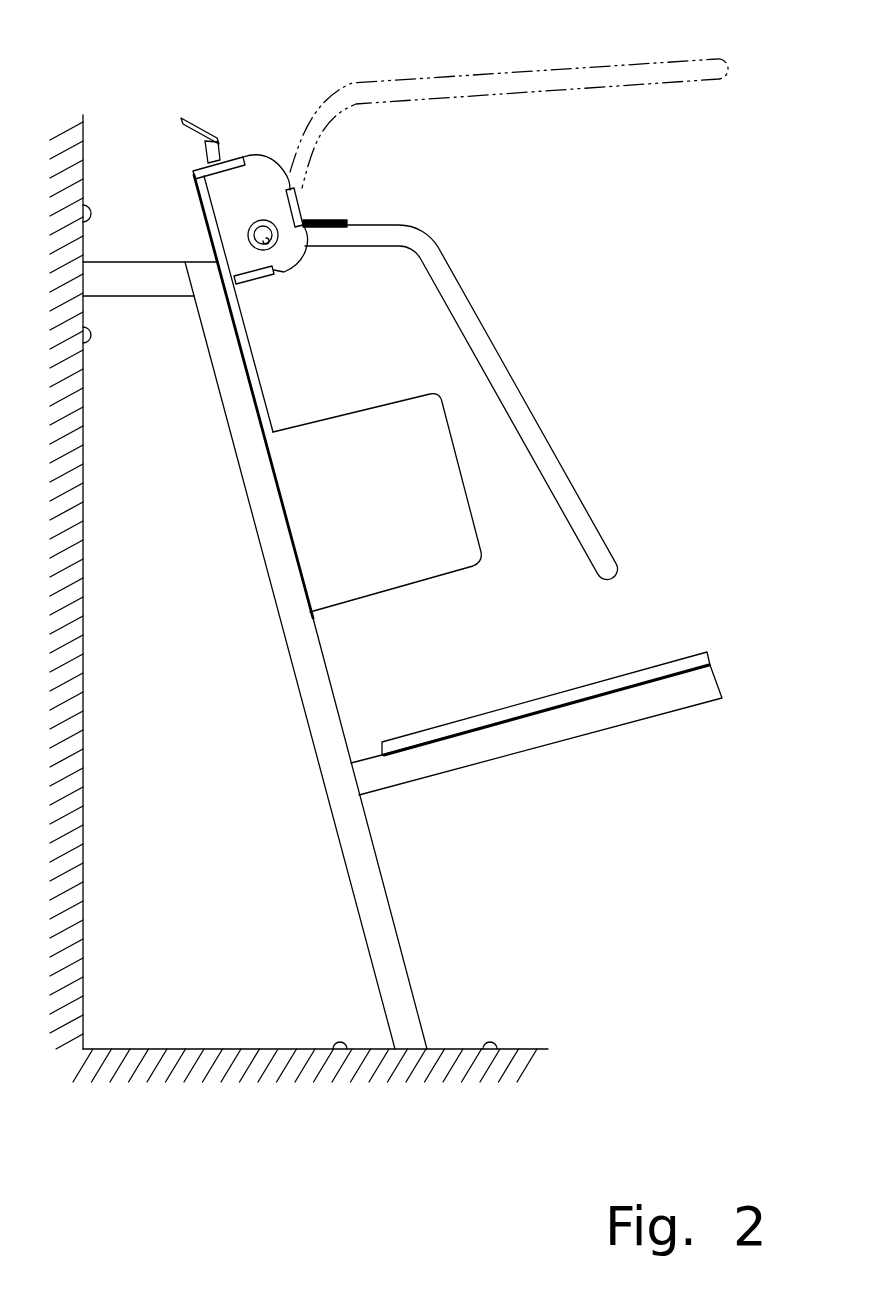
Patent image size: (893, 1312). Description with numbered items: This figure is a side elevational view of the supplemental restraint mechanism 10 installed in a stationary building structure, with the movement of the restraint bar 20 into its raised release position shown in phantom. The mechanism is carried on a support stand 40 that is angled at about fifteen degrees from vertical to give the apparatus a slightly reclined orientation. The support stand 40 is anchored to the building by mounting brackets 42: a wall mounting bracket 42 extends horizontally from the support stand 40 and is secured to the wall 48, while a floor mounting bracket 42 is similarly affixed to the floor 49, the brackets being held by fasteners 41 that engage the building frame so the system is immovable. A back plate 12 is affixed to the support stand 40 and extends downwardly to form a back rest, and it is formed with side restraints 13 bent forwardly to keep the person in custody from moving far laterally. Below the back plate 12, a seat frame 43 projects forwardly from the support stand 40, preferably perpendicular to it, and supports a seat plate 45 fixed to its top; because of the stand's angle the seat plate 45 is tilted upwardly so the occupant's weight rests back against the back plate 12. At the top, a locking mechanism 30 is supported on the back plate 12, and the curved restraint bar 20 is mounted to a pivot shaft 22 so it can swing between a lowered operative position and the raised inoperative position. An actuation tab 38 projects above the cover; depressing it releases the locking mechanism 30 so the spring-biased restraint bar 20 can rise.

The supplemental restraint mechanism 10 is at (606, 872).
The back plate 12 is at (257, 372).
The side restraints 13 is at (432, 487).
The restraint bar 20 is at (530, 412).
The pivot shaft 22 is at (278, 239).
The locking mechanism 30 is at (342, 189).
The actuation tab 38 is at (193, 120).
The support stand 40 is at (368, 871).
The fasteners 41 is at (90, 336).
The mounting brackets 42 is at (93, 241).
The seat frame 43 is at (567, 735).
The seat plate 45 is at (645, 668).
The wall 48 is at (85, 640).
The floor 49 is at (230, 1047).